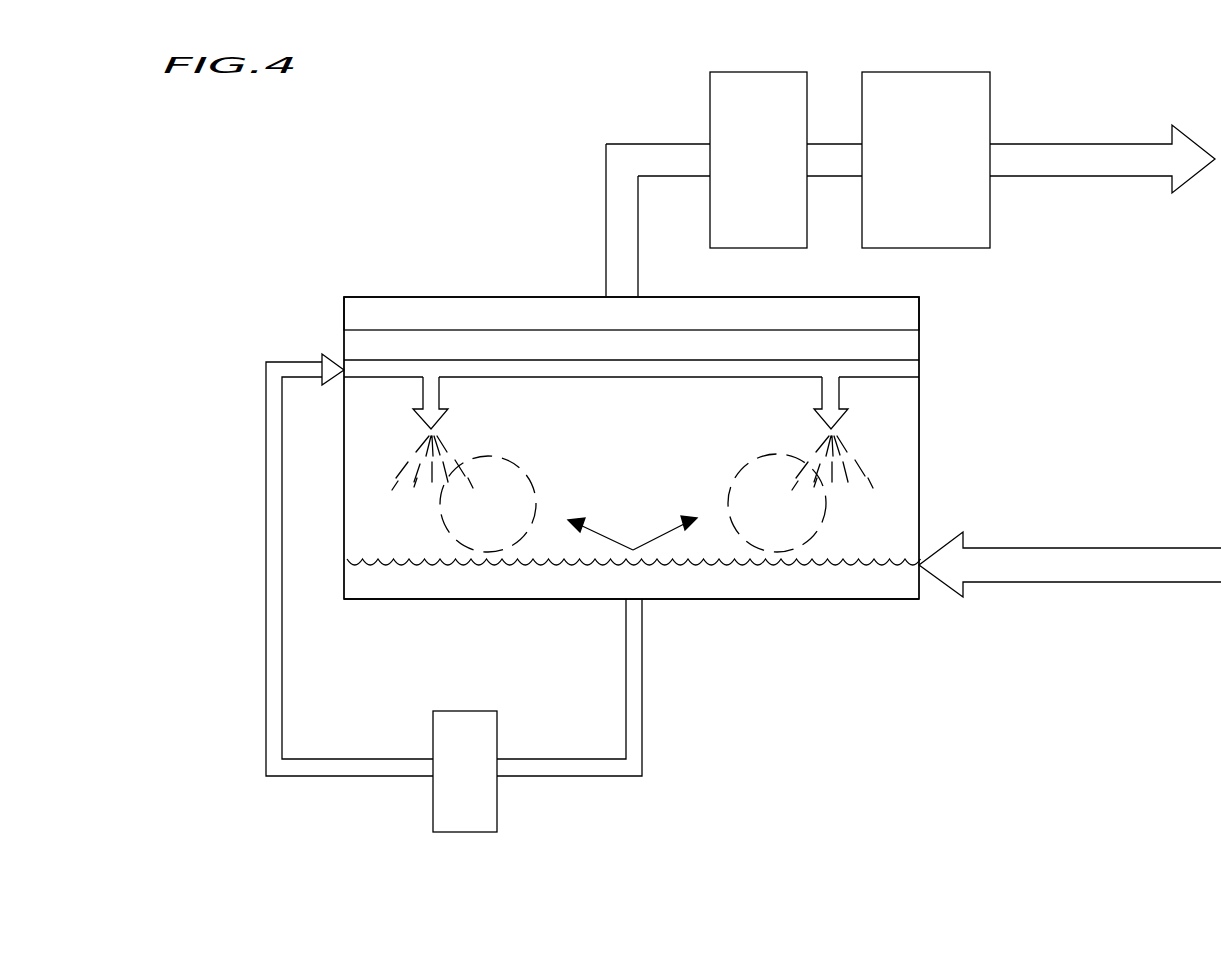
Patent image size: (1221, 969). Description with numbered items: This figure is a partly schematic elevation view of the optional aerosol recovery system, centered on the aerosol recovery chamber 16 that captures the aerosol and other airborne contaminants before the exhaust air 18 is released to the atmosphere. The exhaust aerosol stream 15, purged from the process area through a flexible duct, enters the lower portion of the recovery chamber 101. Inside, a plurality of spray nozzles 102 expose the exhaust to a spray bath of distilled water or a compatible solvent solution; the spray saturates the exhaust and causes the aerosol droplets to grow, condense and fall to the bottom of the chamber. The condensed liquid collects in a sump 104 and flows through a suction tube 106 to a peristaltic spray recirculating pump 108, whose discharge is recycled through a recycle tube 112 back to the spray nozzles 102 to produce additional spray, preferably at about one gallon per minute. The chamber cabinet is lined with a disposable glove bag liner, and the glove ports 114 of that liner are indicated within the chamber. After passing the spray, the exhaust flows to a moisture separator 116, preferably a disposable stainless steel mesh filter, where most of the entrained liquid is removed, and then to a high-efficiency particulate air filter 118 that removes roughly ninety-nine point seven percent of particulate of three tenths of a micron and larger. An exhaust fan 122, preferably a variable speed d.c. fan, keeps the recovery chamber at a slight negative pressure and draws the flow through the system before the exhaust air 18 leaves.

The exhaust aerosol stream 15 is at (1080, 583).
The aerosol recovery chamber 16 is at (945, 384).
The exhaust air 18 is at (1085, 177).
The recovery chamber 101 is at (919, 453).
The spray nozzles 102 is at (440, 387).
The sump 104 is at (720, 600).
The suction tube 106 is at (642, 712).
The peristaltic spray recirculating pump 108 is at (473, 832).
The recirculation line 112 is at (266, 600).
The glove ports 114 is at (535, 487).
The moisture separator 116 is at (343, 313).
The high-efficiency particulate air filter 118 is at (733, 71).
The exhaust fan 122 is at (925, 71).